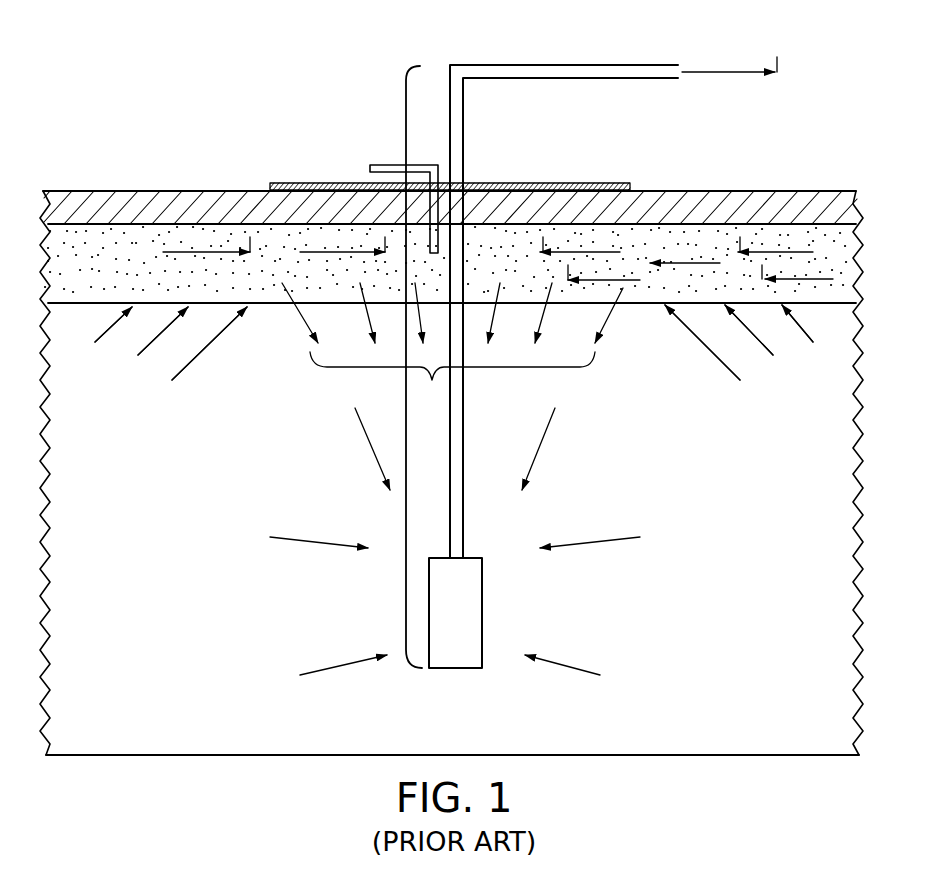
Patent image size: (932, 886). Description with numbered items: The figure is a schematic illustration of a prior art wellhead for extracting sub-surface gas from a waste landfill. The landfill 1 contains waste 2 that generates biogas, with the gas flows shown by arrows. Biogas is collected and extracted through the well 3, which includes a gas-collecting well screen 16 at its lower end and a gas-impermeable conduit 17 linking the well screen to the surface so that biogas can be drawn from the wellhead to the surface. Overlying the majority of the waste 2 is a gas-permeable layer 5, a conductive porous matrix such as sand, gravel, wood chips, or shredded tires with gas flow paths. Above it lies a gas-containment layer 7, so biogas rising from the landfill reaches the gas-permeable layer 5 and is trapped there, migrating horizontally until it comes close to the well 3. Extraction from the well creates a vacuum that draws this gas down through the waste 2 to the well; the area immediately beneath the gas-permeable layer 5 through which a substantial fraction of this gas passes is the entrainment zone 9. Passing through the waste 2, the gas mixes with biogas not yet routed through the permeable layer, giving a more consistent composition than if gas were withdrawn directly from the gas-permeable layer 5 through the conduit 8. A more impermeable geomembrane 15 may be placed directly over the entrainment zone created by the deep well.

The landfill 1 is at (865, 249).
The waste 2 is at (208, 512).
The well 3 is at (406, 392).
The gas-permeable layer 5 is at (848, 265).
The gas-containment layer 7 is at (720, 202).
The conduit 8 is at (374, 165).
The entrainment zone 9 is at (452, 348).
The geomembrane 15 is at (580, 183).
The gas-collecting well screen 16 is at (482, 612).
The gas-impermeable conduit 17 is at (581, 65).